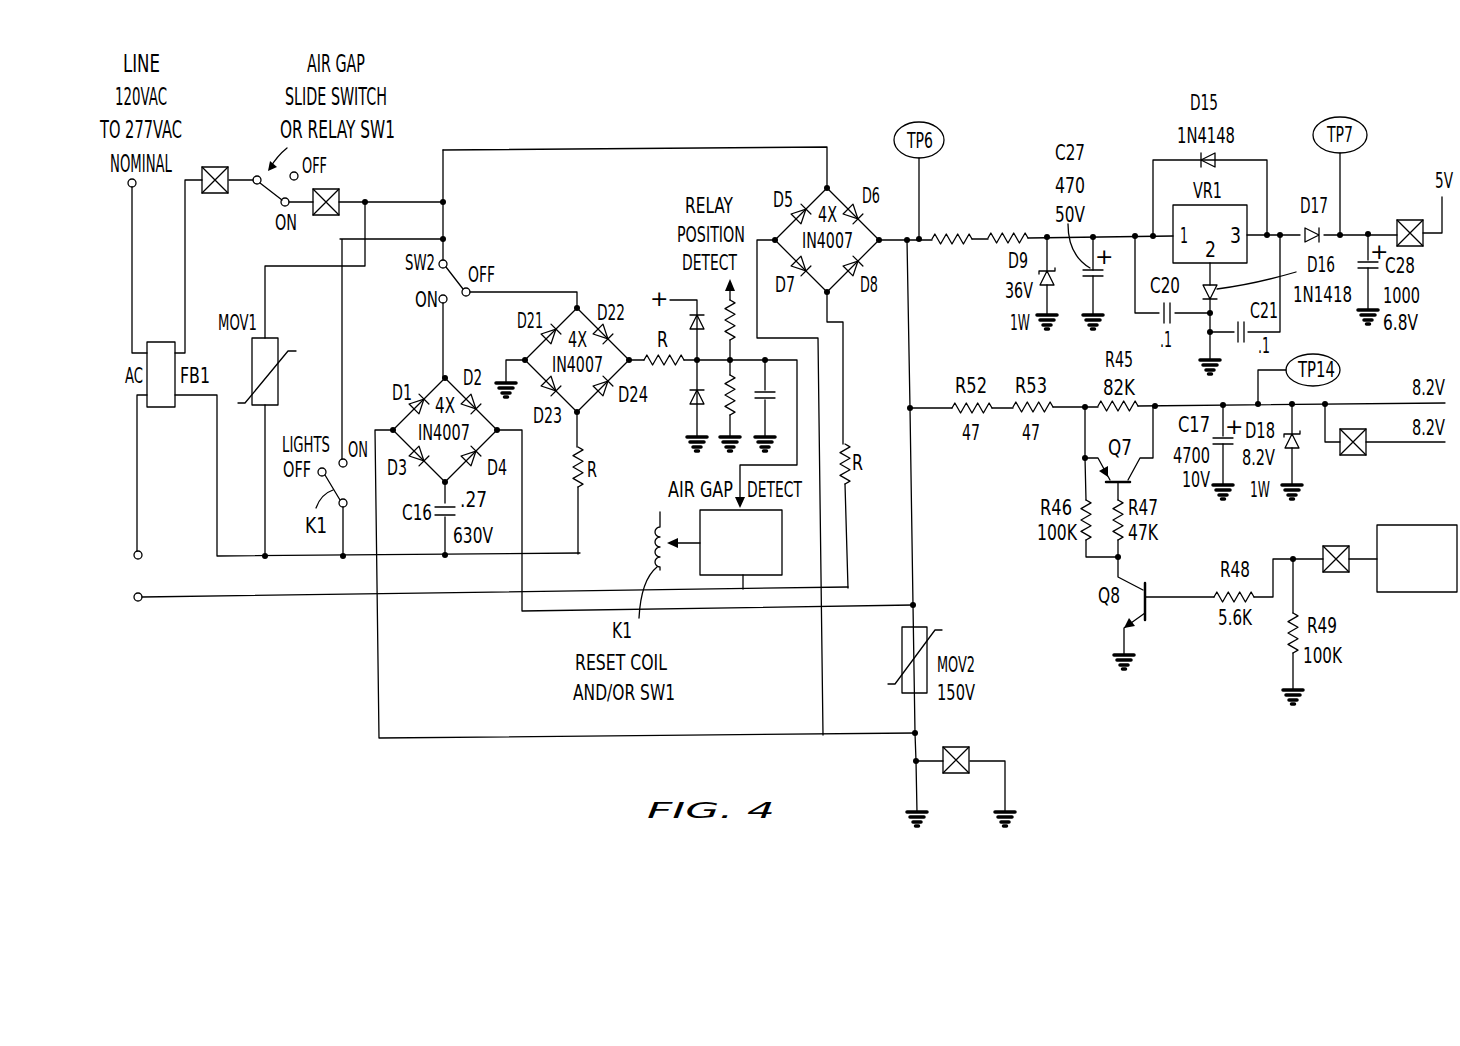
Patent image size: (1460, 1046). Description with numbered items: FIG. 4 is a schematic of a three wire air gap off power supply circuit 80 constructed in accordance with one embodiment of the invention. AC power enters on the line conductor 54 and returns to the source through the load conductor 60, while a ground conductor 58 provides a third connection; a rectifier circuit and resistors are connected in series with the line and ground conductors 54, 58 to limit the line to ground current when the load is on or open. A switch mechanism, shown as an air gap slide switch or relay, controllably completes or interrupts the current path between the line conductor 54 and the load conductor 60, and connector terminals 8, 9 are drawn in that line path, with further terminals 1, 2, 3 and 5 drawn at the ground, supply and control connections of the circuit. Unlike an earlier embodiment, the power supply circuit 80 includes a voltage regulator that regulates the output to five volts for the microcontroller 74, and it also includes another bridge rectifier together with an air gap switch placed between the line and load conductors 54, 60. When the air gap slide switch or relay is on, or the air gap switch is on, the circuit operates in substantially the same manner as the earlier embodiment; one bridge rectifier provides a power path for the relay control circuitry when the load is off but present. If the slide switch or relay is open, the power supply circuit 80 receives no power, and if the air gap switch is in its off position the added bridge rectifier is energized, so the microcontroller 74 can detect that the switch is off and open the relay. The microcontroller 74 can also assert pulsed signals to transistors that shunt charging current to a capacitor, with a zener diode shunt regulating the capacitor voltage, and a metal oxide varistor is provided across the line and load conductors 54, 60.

The line conductor 54 is at (132, 214).
The load conductor 60 is at (137, 460).
The ground conductor 58 is at (237, 598).
The connector terminal 8 is at (215, 197).
The connector terminal 9 is at (326, 217).
The power supply circuit 80 is at (984, 141).
The microcontroller 74 is at (745, 578).
The connector terminal 1 is at (956, 777).
The connector terminal 2 is at (1353, 458).
The connector terminal 3 is at (1410, 218).
The connector terminal 5 is at (1336, 575).